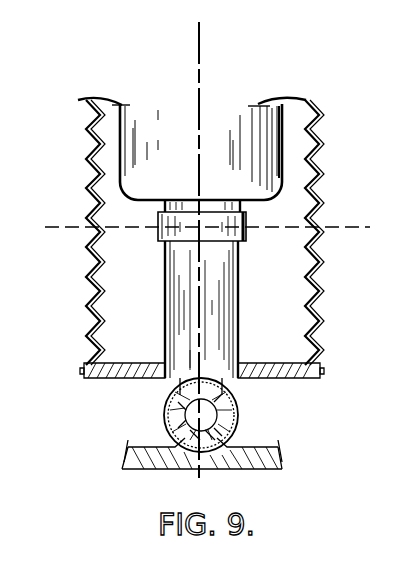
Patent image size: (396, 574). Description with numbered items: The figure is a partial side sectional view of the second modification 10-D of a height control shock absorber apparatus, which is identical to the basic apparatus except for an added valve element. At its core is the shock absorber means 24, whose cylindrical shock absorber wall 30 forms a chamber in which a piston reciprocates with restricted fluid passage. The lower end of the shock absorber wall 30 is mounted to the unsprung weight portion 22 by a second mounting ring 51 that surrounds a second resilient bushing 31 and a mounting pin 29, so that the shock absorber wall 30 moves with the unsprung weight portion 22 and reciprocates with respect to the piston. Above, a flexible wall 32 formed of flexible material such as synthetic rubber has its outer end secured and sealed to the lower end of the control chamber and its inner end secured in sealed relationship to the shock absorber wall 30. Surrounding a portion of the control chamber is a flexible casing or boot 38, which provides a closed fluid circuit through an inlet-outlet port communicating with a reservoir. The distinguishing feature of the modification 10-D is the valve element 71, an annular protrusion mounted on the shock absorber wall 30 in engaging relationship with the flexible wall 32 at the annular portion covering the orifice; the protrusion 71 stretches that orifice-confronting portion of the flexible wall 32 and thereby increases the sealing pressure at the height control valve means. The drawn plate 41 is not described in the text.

The second modification of height control shock absorber apparatus 10-D is at (290, 100).
The flexible wall 32 is at (118, 113).
The flexible casing or boot 38 is at (88, 182).
The valve element 71 is at (158, 237).
The shock absorber means 24 is at (163, 299).
The cylindrical shock absorber wall 30 is at (212, 287).
The plate 41 is at (275, 362).
The mounting pin 29 is at (165, 412).
The second resilient bushing 31 is at (166, 428).
The second mounting ring 51 is at (238, 419).
The unsprung weight portion 22 is at (255, 465).